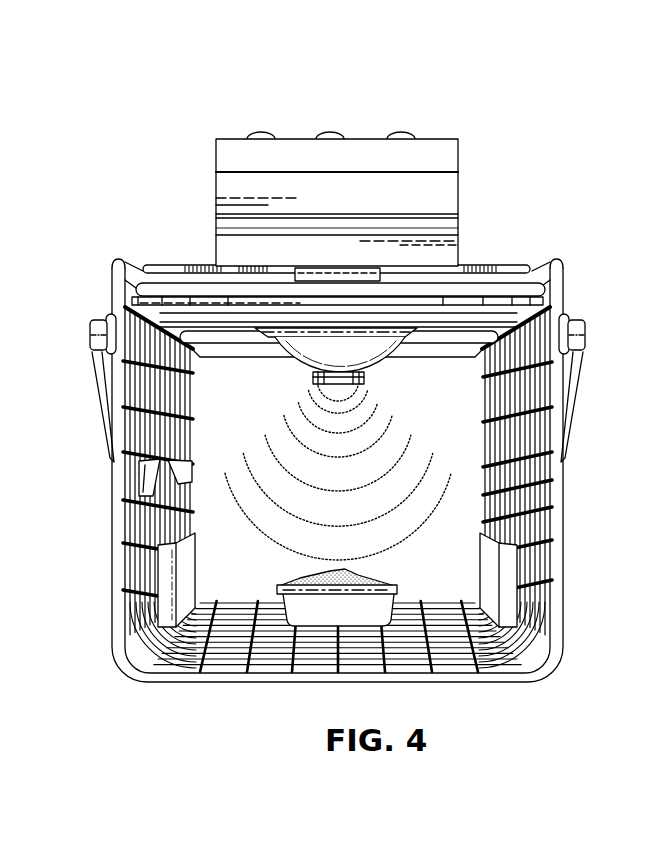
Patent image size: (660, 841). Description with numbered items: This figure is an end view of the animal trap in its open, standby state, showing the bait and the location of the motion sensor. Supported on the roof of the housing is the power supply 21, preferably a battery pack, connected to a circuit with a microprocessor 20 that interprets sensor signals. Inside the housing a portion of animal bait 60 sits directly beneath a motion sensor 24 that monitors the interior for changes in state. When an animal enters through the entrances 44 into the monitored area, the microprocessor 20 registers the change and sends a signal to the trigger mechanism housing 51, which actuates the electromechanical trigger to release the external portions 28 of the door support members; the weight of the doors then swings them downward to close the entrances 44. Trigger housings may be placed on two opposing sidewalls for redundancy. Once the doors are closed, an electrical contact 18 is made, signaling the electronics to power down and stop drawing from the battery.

The microprocessor 20 is at (281, 155).
The power supply 21 is at (171, 174).
The motion sensor 24 is at (364, 381).
The external portions of the bar members 28 is at (94, 368).
The electrical contact 18 is at (150, 478).
The entrances 44 is at (212, 698).
The trigger mechanism housing 51 is at (182, 570).
The animal bait 60 is at (372, 583).